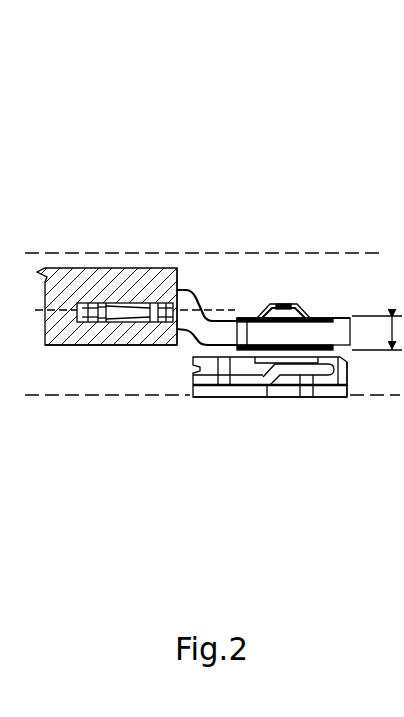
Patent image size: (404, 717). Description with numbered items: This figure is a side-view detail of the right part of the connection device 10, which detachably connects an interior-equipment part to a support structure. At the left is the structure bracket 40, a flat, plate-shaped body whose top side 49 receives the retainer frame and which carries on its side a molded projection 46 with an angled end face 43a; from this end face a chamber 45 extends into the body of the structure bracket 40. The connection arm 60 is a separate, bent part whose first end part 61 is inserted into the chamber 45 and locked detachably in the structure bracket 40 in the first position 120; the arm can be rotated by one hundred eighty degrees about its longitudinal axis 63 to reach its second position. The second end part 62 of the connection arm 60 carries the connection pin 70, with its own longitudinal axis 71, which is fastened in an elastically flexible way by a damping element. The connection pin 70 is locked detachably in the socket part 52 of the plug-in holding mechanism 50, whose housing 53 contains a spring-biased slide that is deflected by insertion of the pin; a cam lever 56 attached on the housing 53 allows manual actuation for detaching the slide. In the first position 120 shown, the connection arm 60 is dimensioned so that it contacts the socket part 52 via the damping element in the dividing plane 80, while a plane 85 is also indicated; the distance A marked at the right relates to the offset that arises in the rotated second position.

The connection device 10 is at (116, 522).
The structure bracket 40 is at (58, 241).
The end face 43a is at (178, 291).
The chamber 45 is at (87, 319).
The projection 46 is at (120, 337).
The top side 49 is at (90, 272).
The plug-in holding mechanism 50 is at (302, 417).
The socket part 52 is at (342, 356).
The housing 53 is at (193, 397).
The cam lever 56 is at (250, 378).
The connection arm 60 is at (212, 306).
The first end part 61 is at (135, 302).
The second end part 62 is at (326, 318).
The longitudinal axis 63 is at (192, 296).
The connection pin 70 is at (282, 318).
The longitudinal axis 71 is at (283, 406).
The dividing plane 80 is at (368, 352).
The plane 85 is at (340, 317).
The first position 120 is at (236, 174).